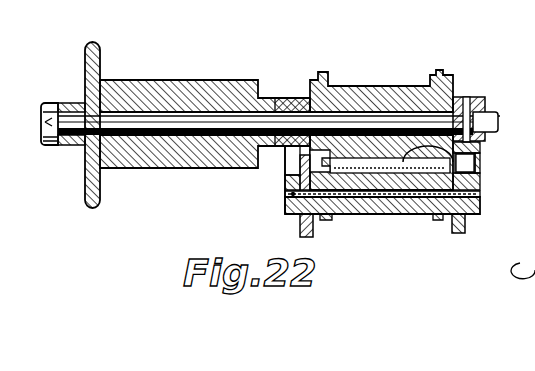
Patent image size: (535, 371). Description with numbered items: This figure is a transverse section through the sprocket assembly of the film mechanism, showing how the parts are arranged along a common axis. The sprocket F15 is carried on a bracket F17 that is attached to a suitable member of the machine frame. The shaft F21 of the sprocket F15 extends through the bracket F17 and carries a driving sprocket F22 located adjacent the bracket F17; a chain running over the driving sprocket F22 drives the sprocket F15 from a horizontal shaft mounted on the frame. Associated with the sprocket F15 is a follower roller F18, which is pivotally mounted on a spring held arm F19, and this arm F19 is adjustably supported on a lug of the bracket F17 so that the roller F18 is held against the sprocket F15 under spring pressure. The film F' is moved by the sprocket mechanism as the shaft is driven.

The driving sprocket F22 is at (88, 177).
The bracket F17 is at (161, 96).
The shaft F21 is at (216, 114).
The sprocket F15 is at (378, 97).
The follower roller F18 is at (387, 214).
The spring held arm F19 is at (443, 223).
The pin slot F is at (458, 149).